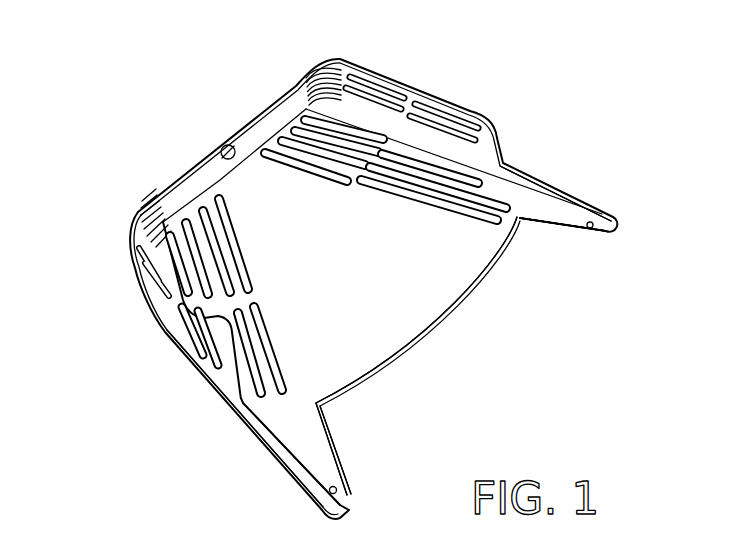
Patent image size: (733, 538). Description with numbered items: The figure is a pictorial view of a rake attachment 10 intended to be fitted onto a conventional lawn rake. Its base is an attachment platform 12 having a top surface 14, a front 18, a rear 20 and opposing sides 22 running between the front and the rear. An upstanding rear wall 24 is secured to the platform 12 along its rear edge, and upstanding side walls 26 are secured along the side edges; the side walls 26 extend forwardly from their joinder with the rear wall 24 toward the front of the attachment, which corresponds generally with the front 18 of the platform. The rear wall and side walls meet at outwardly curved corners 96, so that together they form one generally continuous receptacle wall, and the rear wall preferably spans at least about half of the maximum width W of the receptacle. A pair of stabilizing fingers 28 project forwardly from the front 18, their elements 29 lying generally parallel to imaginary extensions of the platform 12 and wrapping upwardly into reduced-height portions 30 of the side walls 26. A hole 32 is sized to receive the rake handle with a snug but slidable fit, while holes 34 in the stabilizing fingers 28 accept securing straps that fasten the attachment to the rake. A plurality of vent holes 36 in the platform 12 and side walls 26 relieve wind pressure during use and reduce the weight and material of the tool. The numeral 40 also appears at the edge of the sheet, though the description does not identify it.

The rake attachment 10 is at (110, 213).
The attachment platform 12 is at (287, 215).
The top surface 14 is at (468, 262).
The front 18 is at (433, 335).
The rear 20 is at (280, 130).
The opposing sides 22 is at (396, 133).
The upstanding rear wall 24 is at (190, 175).
The upstanding side walls 26 is at (481, 104).
The stabilizing fingers 28 is at (600, 189).
The elements of the stabilizing fingers 29 is at (590, 200).
The reduced-height portions 30 is at (560, 218).
The hole 32 is at (236, 144).
The holes 34 is at (603, 238).
The vent holes 36 is at (328, 108).
The element 40 is at (12, 430).
The corners 96 is at (326, 59).
The maximum width W is at (481, 140).